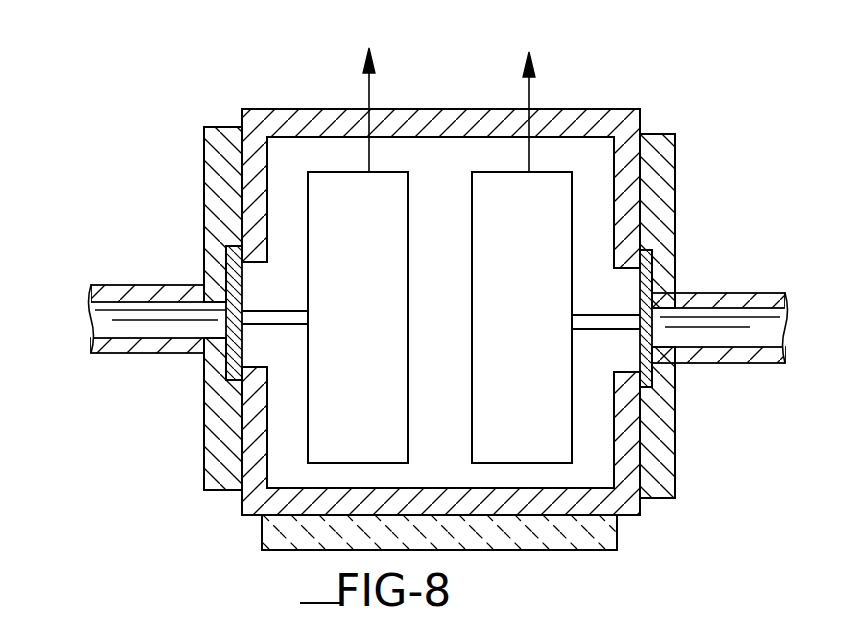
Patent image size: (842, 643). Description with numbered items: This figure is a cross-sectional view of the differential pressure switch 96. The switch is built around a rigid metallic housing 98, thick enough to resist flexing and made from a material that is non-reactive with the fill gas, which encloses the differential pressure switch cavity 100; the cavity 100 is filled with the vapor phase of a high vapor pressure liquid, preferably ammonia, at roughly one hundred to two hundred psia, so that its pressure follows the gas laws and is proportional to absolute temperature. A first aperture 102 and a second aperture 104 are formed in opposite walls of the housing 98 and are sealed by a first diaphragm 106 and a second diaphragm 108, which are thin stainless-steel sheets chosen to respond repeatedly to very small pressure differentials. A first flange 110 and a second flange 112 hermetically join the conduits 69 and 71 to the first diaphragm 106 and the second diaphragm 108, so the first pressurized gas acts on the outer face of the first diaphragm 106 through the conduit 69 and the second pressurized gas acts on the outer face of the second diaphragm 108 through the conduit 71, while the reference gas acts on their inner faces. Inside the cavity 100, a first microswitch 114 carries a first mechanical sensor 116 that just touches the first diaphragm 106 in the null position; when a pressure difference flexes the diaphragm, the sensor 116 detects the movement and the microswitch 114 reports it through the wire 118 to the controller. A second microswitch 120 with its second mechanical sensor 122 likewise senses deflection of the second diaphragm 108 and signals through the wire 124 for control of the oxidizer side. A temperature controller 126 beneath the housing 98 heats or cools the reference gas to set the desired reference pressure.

The differential pressure switch 96 is at (246, 85).
The housing 98 is at (607, 118).
The differential pressure switch cavity 100 is at (592, 443).
The first aperture 102 is at (248, 348).
The second aperture 104 is at (638, 270).
The first diaphragm 106 is at (238, 365).
The second diaphragm 108 is at (625, 283).
The first flange 110 is at (207, 196).
The second flange 112 is at (662, 172).
The first microswitch 114 is at (392, 187).
The first mechanical sensor 116 is at (268, 315).
The wire 118 is at (370, 90).
The second microswitch 120 is at (488, 422).
The second mechanical sensor 122 is at (592, 332).
The wire 124 is at (530, 92).
The temperature controller 126 is at (610, 535).
The conduit 69 is at (120, 325).
The conduit 71 is at (760, 335).